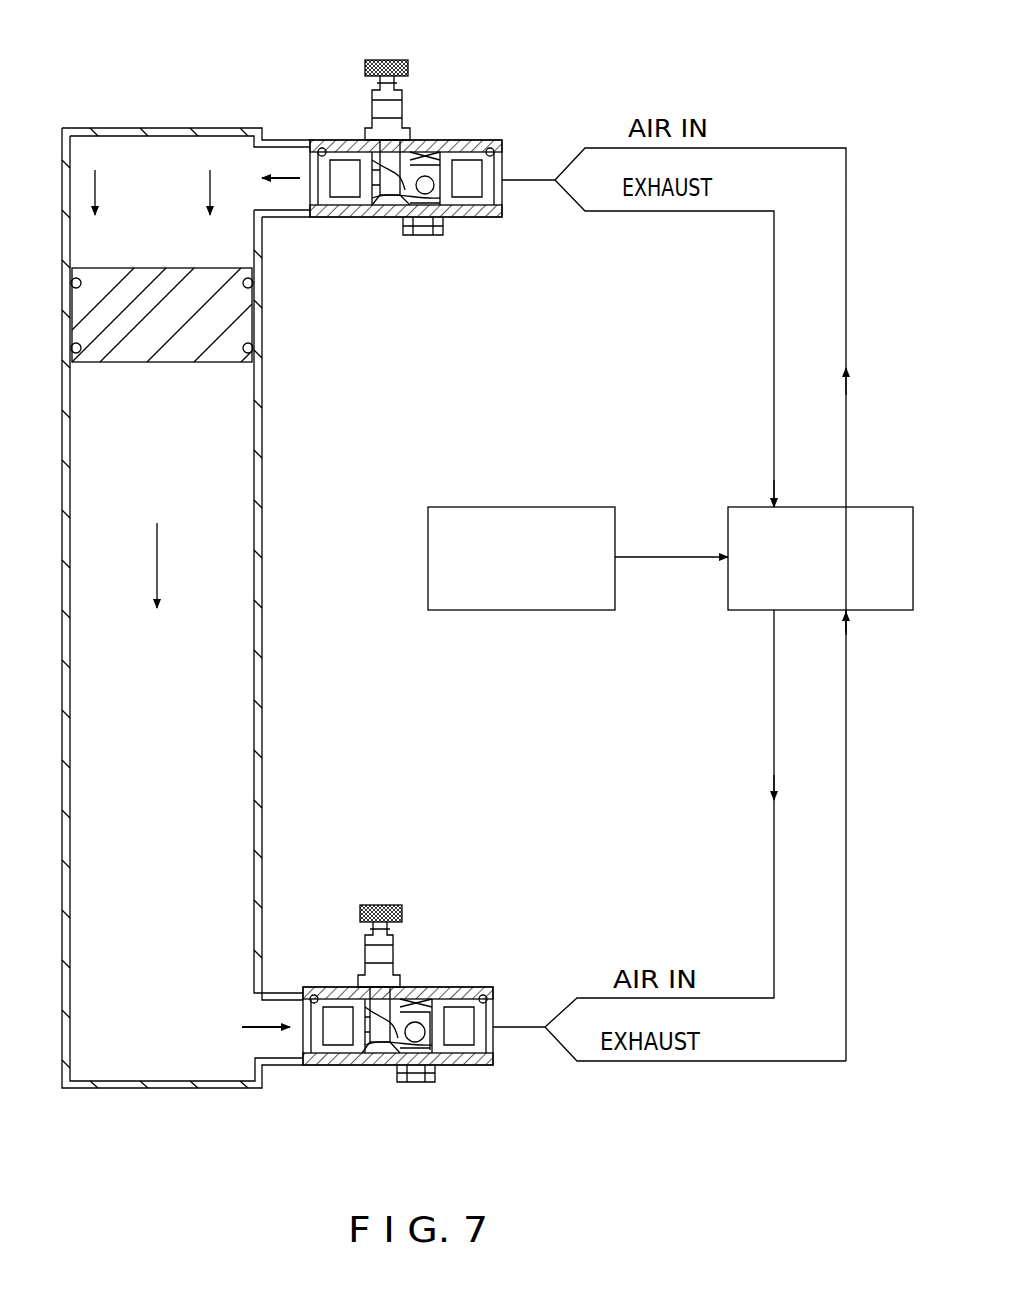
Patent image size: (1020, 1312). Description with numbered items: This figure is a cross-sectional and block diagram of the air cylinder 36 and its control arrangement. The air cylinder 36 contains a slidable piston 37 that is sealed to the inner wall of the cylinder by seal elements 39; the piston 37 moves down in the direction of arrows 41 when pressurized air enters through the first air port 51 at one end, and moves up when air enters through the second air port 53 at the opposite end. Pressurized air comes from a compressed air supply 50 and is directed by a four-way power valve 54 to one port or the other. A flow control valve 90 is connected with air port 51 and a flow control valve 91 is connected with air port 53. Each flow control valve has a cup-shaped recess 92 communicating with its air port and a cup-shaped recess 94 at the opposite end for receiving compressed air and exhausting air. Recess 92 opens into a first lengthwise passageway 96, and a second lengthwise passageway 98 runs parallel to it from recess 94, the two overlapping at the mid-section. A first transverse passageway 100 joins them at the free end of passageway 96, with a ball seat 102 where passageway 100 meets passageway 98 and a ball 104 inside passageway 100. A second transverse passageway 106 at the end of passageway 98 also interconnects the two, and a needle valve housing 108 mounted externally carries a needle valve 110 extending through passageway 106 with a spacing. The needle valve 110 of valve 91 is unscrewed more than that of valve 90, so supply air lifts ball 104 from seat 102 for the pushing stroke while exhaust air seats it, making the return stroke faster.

The air cylinder 36 is at (264, 538).
The piston 37 is at (210, 352).
The seal elements 39 is at (253, 284).
The arrows 41 is at (96, 184).
The compressed air supply 50 is at (497, 507).
The first air port 51 is at (266, 160).
The second air port 53 is at (248, 1078).
The four-way power valve 54 is at (723, 512).
The flow control valve 90 is at (457, 133).
The flow control valve 91 is at (348, 1072).
The cup-shaped recess 92 is at (322, 148).
The cup-shaped recess 94 is at (490, 150).
The first lengthwise passageway 96 is at (384, 190).
The second lengthwise passageway 98 is at (423, 145).
The first transverse passageway 100 is at (424, 196).
The ball seat 102 is at (418, 998).
The ball 104 is at (434, 222).
The second transverse passageway 106 is at (376, 165).
The needle valve housing 108 is at (400, 100).
The needle valve 110 is at (394, 198).